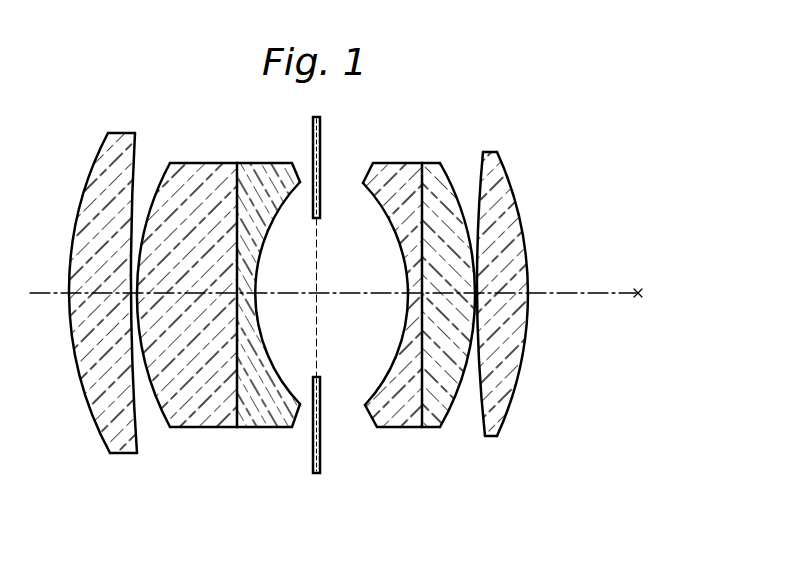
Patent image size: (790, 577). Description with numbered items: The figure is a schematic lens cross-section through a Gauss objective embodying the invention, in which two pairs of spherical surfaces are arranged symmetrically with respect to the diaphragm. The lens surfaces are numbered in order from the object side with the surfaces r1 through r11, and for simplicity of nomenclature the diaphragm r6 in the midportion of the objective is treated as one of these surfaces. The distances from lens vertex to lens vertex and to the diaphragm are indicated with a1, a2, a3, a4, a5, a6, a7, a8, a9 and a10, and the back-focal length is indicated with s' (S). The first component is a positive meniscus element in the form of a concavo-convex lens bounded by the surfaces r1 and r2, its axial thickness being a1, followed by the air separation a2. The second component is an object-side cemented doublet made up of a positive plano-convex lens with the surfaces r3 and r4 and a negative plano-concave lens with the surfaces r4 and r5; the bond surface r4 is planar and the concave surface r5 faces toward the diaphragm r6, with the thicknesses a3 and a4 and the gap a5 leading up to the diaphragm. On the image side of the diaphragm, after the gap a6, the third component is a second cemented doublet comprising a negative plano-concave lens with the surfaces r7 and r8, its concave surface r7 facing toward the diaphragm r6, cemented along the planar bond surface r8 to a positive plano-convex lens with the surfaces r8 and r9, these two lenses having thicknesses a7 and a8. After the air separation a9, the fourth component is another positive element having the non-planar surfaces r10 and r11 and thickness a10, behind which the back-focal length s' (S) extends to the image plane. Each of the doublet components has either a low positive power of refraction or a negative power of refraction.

The vertex distance a1 is at (104, 322).
The vertex distance a2 is at (137, 258).
The vertex distance a3 is at (195, 325).
The vertex distance a4 is at (270, 325).
The vertex distance a5 is at (284, 279).
The vertex distance a6 is at (356, 279).
The vertex distance a7 is at (382, 330).
The vertex distance a8 is at (448, 320).
The vertex distance a9 is at (472, 270).
The vertex distance a10 is at (526, 325).
The lens surface r1 is at (90, 413).
The lens surface r2 is at (140, 433).
The lens surface r3 is at (164, 420).
The bond surface r4 is at (237, 427).
The concave surface r5 is at (297, 392).
The diaphragm r6 is at (321, 458).
The concave surface r7 is at (370, 397).
The bond surface r8 is at (412, 405).
The lens surface r9 is at (452, 402).
The lens surface r10 is at (478, 420).
The lens surface r11 is at (513, 403).
The back-focal length S is at (585, 292).